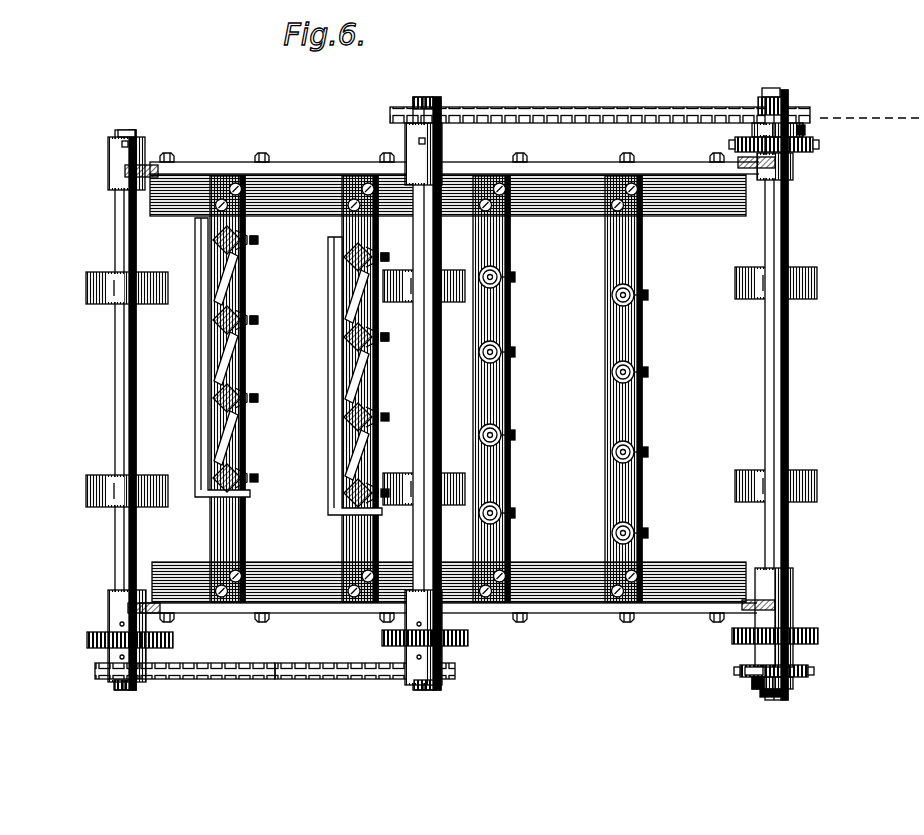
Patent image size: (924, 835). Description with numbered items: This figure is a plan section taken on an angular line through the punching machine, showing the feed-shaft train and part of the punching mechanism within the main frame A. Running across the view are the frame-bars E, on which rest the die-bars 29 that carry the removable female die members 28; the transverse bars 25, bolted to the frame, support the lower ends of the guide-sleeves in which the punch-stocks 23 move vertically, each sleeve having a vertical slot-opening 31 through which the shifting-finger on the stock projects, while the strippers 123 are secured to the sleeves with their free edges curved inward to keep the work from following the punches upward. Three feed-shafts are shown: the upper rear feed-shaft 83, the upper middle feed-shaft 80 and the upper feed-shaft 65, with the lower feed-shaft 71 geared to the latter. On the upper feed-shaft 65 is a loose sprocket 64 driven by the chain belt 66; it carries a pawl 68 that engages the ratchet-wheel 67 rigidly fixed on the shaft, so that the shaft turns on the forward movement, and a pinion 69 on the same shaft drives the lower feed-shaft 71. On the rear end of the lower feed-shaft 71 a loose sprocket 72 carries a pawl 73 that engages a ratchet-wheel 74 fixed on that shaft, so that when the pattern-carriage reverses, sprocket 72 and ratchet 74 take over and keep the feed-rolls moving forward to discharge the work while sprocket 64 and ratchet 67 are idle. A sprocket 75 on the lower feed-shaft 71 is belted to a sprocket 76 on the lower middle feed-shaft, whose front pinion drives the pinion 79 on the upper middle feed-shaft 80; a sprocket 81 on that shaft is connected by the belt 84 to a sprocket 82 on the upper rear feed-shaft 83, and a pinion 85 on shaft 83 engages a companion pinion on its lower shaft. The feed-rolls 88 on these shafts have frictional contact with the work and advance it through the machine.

The punch-stocks 23 is at (346, 260).
The transverse bars 25 is at (232, 437).
The female die members 28 is at (640, 305).
The die-bars 29 is at (505, 332).
The vertical slot-opening 31 is at (228, 396).
The sprocket 64 is at (763, 667).
The upper feed-shaft 65 is at (787, 410).
The chain belt 66 is at (806, 668).
The ratchet-wheel 67 is at (794, 688).
The pawl 68 is at (762, 688).
The pinion 69 is at (788, 623).
The lower feed-shaft 71 is at (771, 92).
The sprocket 72 is at (806, 152).
The pawl 73 is at (802, 128).
The ratchet-wheel 74 is at (752, 130).
The sprocket 75 is at (790, 108).
The sprocket 76 is at (406, 113).
The pinion 79 is at (468, 638).
The upper middle feed-shaft 80 is at (424, 390).
The sprocket 81 is at (455, 672).
The sprocket 82 is at (100, 680).
The upper rear feed-shaft 83 is at (128, 367).
The belt 84 is at (203, 680).
The pinion 85 is at (87, 640).
The collars 88 is at (86, 284).
The strippers 123 is at (199, 428).
The main frame A is at (210, 170).
The frame-bars E is at (670, 204).